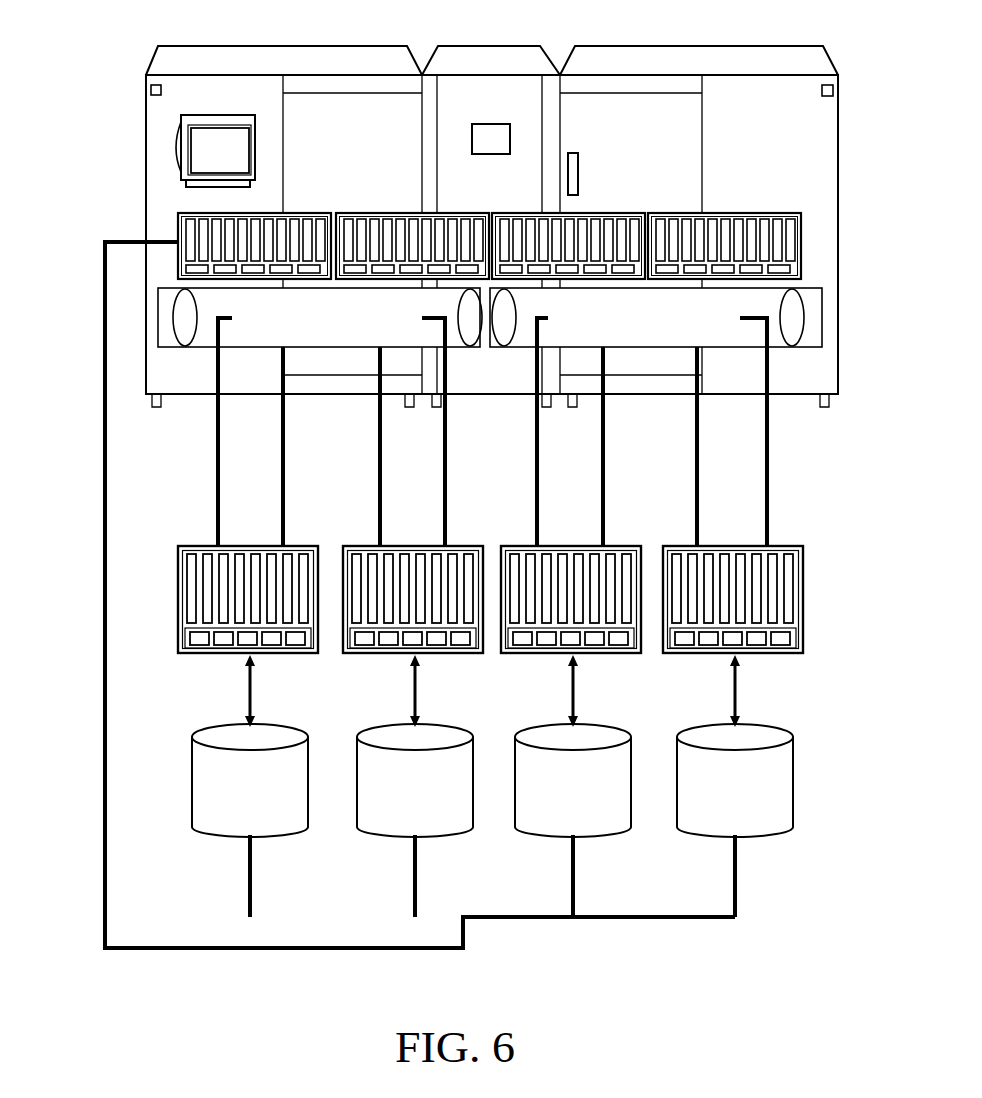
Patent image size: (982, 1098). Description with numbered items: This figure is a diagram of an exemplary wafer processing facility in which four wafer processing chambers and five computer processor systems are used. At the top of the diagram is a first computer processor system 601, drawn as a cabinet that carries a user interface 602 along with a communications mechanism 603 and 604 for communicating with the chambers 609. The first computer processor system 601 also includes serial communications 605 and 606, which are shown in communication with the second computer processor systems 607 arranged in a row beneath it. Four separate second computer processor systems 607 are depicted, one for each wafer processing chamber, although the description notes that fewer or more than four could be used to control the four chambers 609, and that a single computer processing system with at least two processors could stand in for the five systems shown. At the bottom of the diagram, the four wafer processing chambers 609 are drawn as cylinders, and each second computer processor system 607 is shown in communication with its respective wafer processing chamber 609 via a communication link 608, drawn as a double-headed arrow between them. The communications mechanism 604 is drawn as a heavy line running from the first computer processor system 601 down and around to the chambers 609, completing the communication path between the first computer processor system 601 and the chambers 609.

The first computer processor system 601 is at (178, 82).
The user interface 602 is at (176, 137).
The communications mechanism 603 is at (207, 230).
The communications mechanism 604 is at (105, 250).
The serial communications 605 is at (265, 308).
The serial communications 606 is at (446, 528).
The second computer processor systems 607 is at (418, 590).
The communication links 608 is at (415, 703).
The wafer processing chambers 609 is at (415, 757).